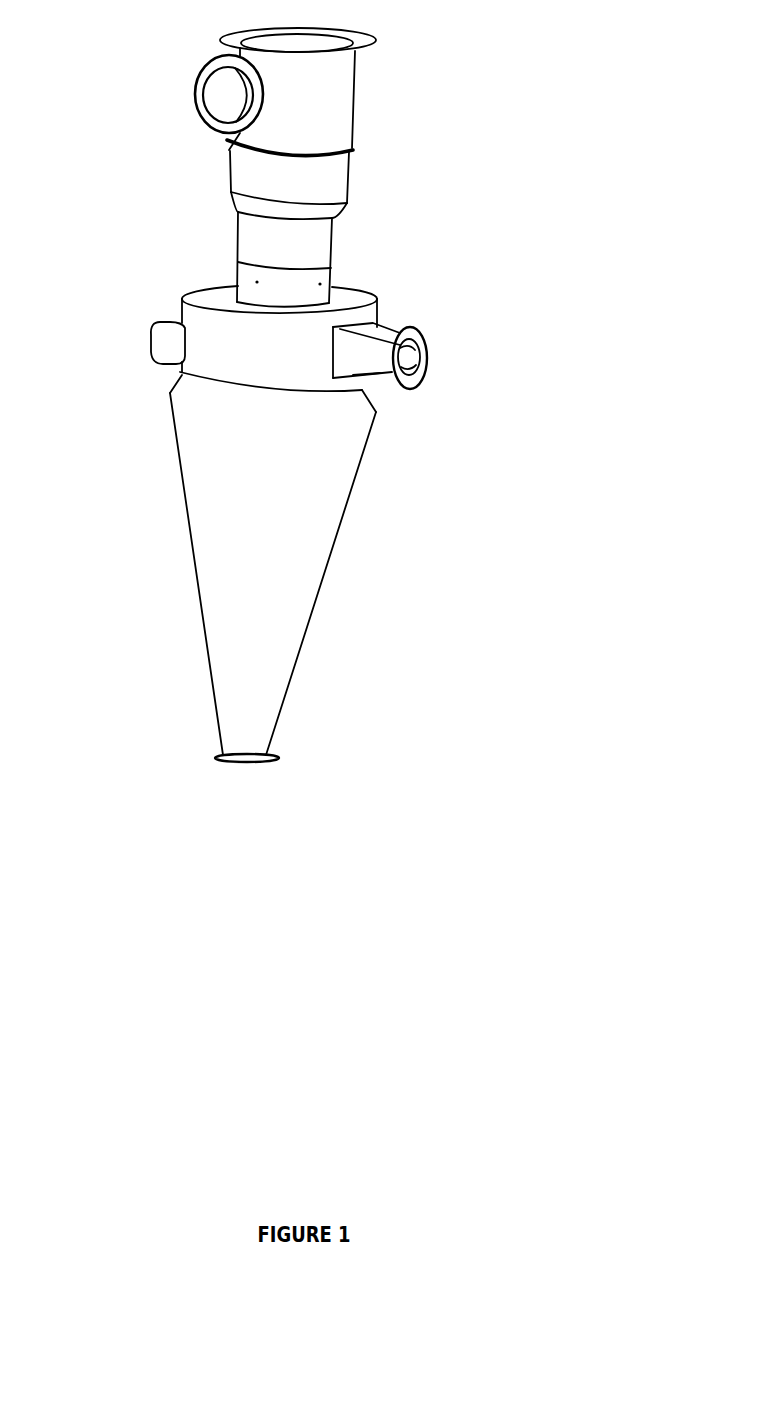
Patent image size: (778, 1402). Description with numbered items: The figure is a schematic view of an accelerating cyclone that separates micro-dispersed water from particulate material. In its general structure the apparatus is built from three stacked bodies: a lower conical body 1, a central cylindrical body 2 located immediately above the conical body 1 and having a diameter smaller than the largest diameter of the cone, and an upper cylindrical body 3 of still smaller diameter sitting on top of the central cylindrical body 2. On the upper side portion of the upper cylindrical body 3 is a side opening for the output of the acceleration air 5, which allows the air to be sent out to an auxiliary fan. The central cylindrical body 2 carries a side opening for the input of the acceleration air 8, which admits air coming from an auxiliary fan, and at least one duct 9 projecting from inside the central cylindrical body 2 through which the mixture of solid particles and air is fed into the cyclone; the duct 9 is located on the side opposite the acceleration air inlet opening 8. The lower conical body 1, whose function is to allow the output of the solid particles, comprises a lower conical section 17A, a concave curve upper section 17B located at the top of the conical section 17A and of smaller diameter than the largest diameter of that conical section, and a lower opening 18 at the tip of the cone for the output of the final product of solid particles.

The lower conical body 1 is at (268, 598).
The central cylindrical body 2 is at (193, 315).
The upper cylindrical body 3 is at (328, 101).
The side opening for the output of the acceleration air 5 is at (224, 93).
The side opening for the input of the acceleration air 8 is at (410, 360).
The duct 9 is at (160, 342).
The lower conical section 17A is at (198, 495).
The concave curve upper section 17B is at (275, 399).
The lower opening 18 is at (243, 765).